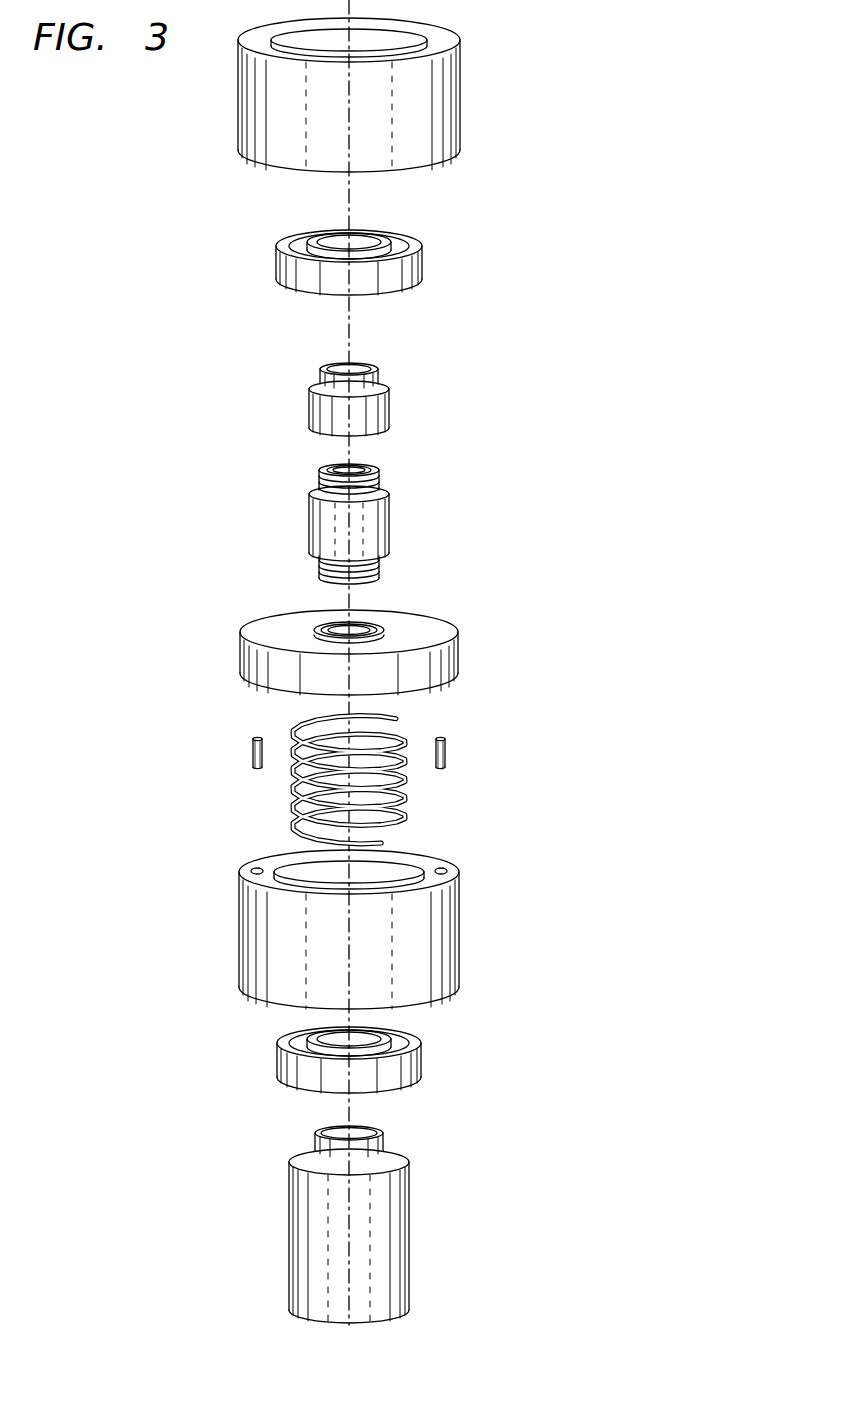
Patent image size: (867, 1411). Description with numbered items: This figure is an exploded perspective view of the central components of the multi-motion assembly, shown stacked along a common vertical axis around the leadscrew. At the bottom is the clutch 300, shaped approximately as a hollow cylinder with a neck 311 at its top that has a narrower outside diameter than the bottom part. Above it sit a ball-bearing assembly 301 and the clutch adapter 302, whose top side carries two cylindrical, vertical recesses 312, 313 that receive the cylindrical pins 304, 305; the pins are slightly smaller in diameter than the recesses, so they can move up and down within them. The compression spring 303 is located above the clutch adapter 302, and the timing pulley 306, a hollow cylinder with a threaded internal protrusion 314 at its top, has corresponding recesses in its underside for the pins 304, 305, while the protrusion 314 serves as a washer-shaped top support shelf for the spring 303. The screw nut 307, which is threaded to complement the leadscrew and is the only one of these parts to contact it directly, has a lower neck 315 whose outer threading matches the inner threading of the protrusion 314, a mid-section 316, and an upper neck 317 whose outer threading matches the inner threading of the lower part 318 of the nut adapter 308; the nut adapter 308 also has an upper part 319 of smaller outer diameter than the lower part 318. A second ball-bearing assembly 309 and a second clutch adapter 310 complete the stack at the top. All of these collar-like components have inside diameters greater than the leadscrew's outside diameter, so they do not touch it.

The clutch 300 is at (311, 1222).
The ball-bearing assembly 301 is at (423, 1062).
The clutch adapter 302 is at (348, 929).
The spring 303 is at (298, 797).
The pin 304 is at (447, 752).
The pin 305 is at (250, 752).
The timing pulley 306 is at (357, 651).
The screw nut 307 is at (351, 521).
The nut adapter 308 is at (355, 395).
The ball-bearing assembly 309 is at (422, 265).
The clutch adapter 310 is at (460, 98).
The neck 311 is at (315, 1137).
The recess 312 is at (452, 868).
The recess 313 is at (247, 870).
The threaded internal protrusion 314 is at (318, 630).
The lower neck 315 is at (318, 566).
The mid-section 316 is at (309, 520).
The upper neck 317 is at (318, 476).
The lower part 318 is at (309, 420).
The upper part 319 is at (319, 370).